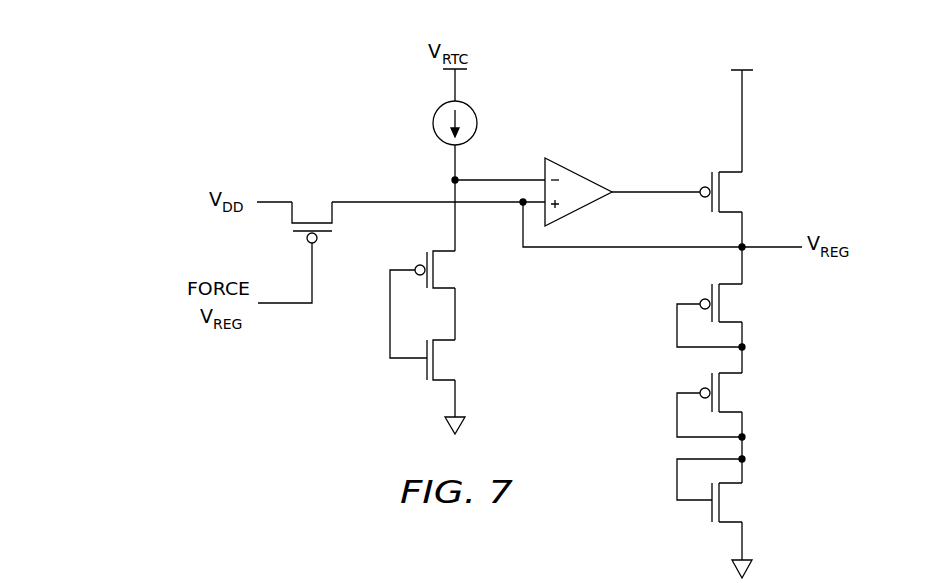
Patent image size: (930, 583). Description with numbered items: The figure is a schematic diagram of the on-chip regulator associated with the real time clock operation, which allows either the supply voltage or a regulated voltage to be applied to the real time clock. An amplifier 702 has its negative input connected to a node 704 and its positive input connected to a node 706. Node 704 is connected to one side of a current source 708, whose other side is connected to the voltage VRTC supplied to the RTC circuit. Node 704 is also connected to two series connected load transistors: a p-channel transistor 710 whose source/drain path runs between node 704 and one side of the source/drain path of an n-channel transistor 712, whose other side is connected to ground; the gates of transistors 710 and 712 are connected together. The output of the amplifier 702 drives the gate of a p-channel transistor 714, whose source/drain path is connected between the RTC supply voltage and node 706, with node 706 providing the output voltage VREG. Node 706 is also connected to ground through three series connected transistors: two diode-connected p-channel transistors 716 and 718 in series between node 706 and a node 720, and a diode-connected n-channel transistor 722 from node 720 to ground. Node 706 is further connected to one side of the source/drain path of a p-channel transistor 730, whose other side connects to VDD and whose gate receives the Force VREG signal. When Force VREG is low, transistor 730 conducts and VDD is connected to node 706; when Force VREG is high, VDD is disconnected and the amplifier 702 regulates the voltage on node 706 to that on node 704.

The amplifier 702 is at (578, 172).
The node 704 is at (445, 181).
The node 706 is at (515, 208).
The current source 708 is at (432, 127).
The p-channel transistor 710 is at (423, 257).
The n-channel transistor 712 is at (423, 371).
The p-channel transistor 714 is at (710, 180).
The p-channel transistor 716 is at (710, 291).
The p-channel transistor 718 is at (710, 381).
The node 720 is at (745, 451).
The n-channel transistor 722 is at (708, 513).
The p-channel transistor 730 is at (298, 239).